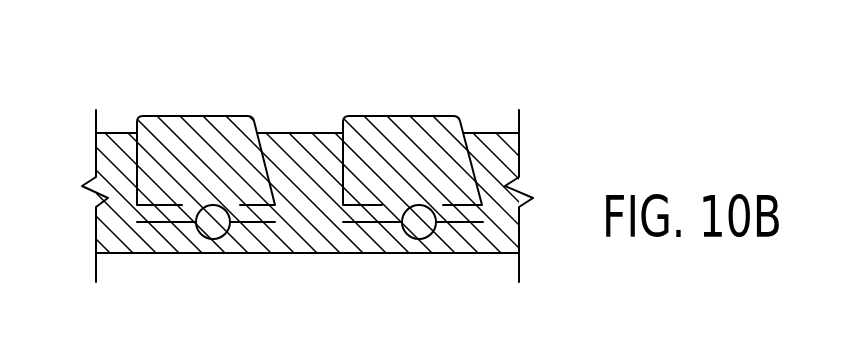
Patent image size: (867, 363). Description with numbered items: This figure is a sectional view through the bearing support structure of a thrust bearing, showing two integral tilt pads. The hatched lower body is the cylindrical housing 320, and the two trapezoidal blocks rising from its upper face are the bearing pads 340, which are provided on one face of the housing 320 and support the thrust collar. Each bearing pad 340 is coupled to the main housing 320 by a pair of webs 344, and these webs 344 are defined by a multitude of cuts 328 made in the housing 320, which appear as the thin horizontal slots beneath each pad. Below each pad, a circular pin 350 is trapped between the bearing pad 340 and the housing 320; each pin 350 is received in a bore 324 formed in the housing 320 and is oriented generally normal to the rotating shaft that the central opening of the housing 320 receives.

The housing 320 is at (318, 240).
The bores 324 is at (410, 240).
The cuts 328 is at (470, 207).
The bearing pads 340 is at (412, 123).
The webs 344 is at (157, 215).
The pins 350 is at (208, 218).